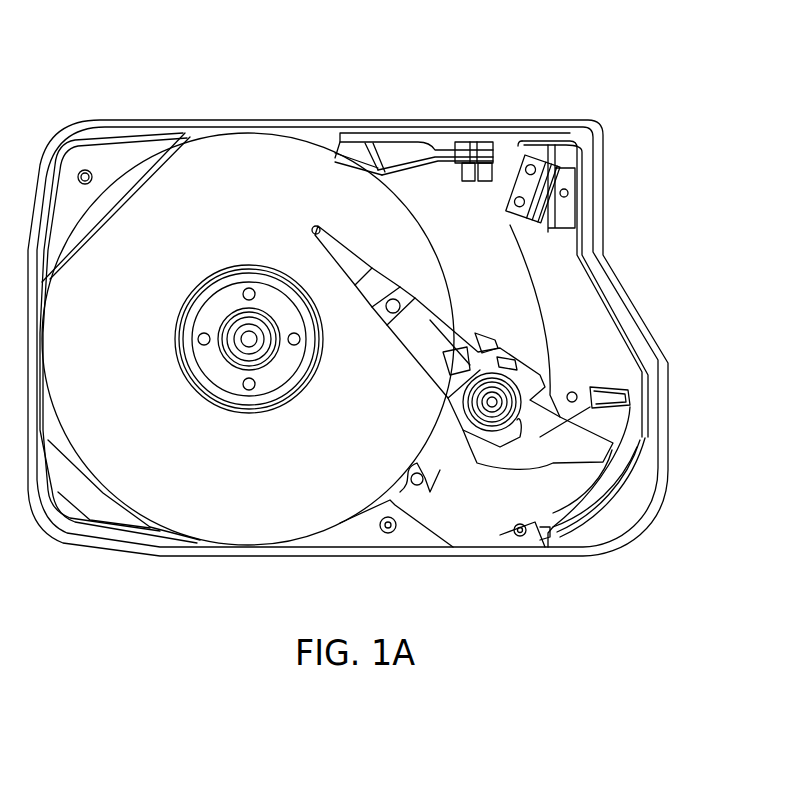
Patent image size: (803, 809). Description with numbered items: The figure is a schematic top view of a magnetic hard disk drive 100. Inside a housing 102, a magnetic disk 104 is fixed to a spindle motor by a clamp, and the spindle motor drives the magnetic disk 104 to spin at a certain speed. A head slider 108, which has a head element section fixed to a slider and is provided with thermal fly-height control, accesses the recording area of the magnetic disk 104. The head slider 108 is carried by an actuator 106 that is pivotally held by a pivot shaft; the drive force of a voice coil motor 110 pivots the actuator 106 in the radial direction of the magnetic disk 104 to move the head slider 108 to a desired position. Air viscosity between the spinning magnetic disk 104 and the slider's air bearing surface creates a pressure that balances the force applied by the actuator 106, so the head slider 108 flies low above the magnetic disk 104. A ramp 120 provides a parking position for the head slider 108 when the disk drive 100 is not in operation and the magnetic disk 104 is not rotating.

The magnetic hard disk drive 100 is at (325, 106).
The housing 102 is at (600, 174).
The magnetic disk 104 is at (213, 130).
The actuator 106 is at (495, 322).
The head slider 108 is at (313, 232).
The voice coil motor 110 is at (555, 477).
The ramp 120 is at (448, 141).